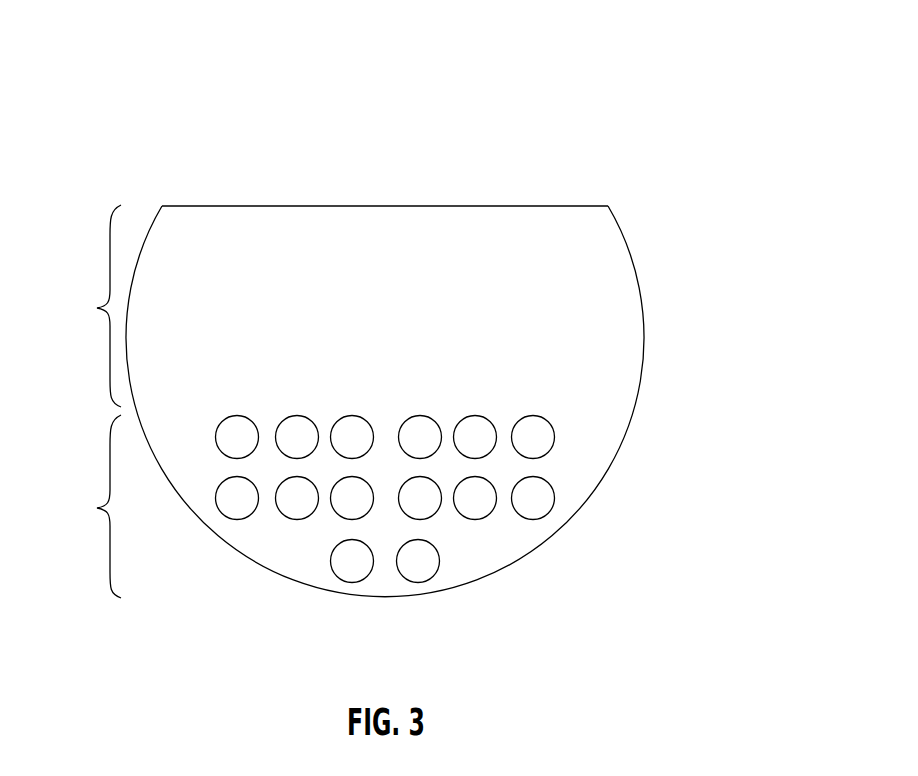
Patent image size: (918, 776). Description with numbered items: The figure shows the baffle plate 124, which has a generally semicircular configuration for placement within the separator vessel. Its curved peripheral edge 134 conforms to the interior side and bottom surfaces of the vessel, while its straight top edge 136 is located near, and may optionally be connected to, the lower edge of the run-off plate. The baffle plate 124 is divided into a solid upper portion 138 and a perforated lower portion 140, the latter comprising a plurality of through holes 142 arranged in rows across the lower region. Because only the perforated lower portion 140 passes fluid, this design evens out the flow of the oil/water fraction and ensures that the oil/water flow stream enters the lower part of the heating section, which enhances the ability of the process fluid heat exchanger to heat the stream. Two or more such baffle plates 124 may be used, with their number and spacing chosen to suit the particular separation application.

The baffle plate 124 is at (665, 72).
The curved peripheral edge 134 is at (644, 330).
The straight top edge 136 is at (403, 206).
The solid upper portion 138 is at (86, 306).
The perforated lower portion 140 is at (86, 506).
The through holes 142 is at (555, 438).